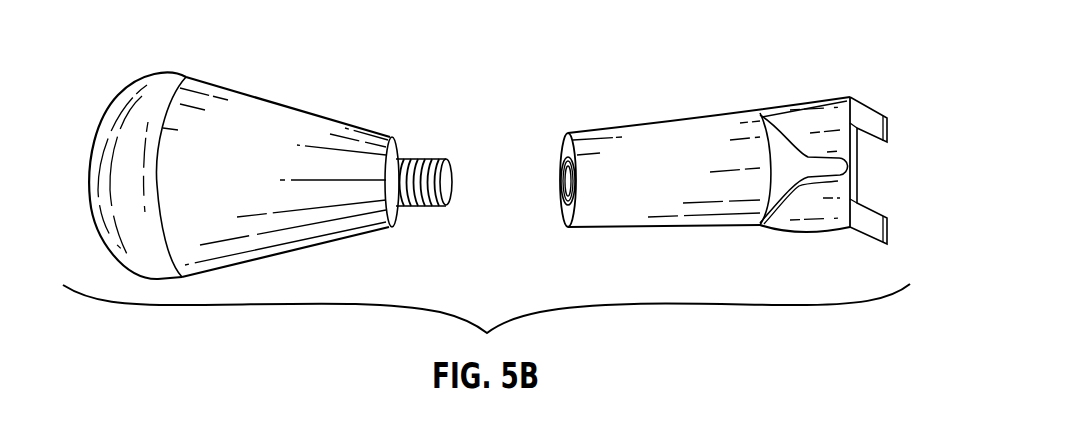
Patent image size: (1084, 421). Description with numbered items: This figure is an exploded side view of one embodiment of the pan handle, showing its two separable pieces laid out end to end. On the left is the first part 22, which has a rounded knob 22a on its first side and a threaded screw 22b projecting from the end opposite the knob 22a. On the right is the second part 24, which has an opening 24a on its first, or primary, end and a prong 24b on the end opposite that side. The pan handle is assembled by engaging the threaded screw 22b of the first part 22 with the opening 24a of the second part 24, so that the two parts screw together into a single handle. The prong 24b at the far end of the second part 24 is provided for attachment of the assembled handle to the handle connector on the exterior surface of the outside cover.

The first part 22 is at (263, 151).
The knob 22a is at (131, 97).
The threaded screw 22b is at (433, 158).
The second part 24 is at (709, 141).
The opening 24a is at (563, 192).
The prong 24b is at (858, 174).